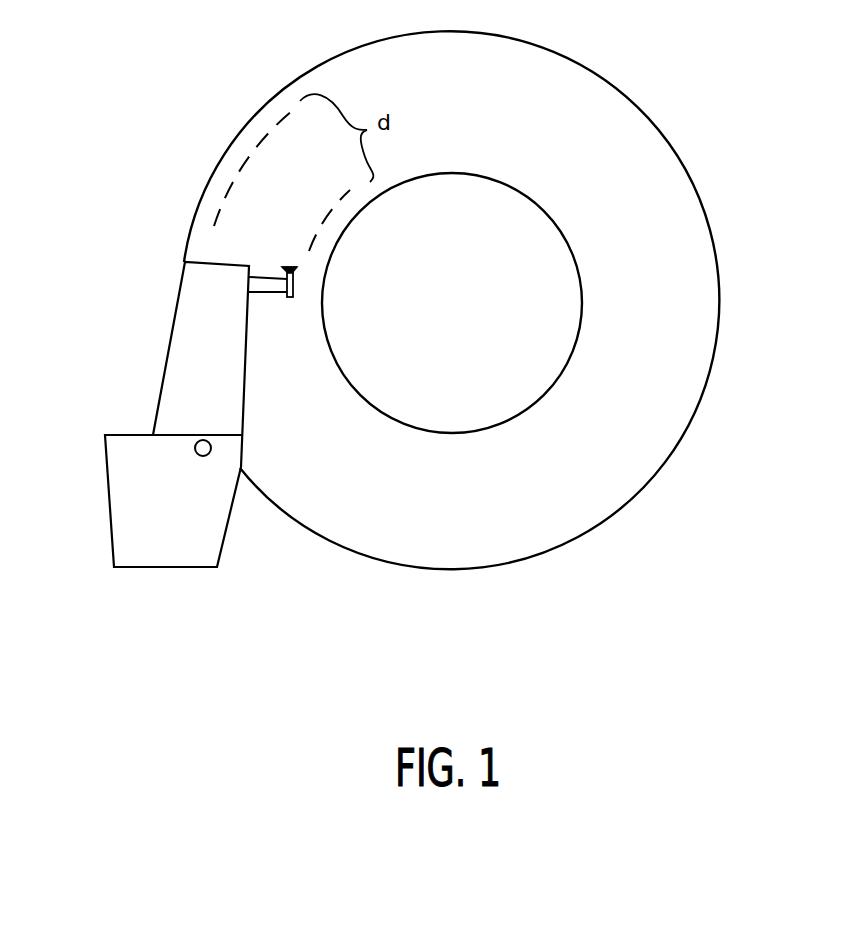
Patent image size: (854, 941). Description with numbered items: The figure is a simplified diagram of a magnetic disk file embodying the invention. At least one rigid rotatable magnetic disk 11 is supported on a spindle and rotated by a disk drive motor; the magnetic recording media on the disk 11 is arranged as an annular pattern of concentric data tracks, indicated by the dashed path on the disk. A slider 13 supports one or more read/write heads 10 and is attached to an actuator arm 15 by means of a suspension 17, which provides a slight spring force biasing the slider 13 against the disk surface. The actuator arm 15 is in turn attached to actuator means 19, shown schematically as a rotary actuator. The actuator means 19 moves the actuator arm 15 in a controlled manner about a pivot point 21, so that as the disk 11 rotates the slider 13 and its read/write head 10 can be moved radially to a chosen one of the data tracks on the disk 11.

The read/write head 10 is at (289, 266).
The magnetic disk 11 is at (664, 316).
The slider 13 is at (290, 298).
The actuator arm 15 is at (187, 343).
The suspension 17 is at (265, 287).
The actuator means 19 is at (130, 488).
The pivot point 21 is at (196, 447).